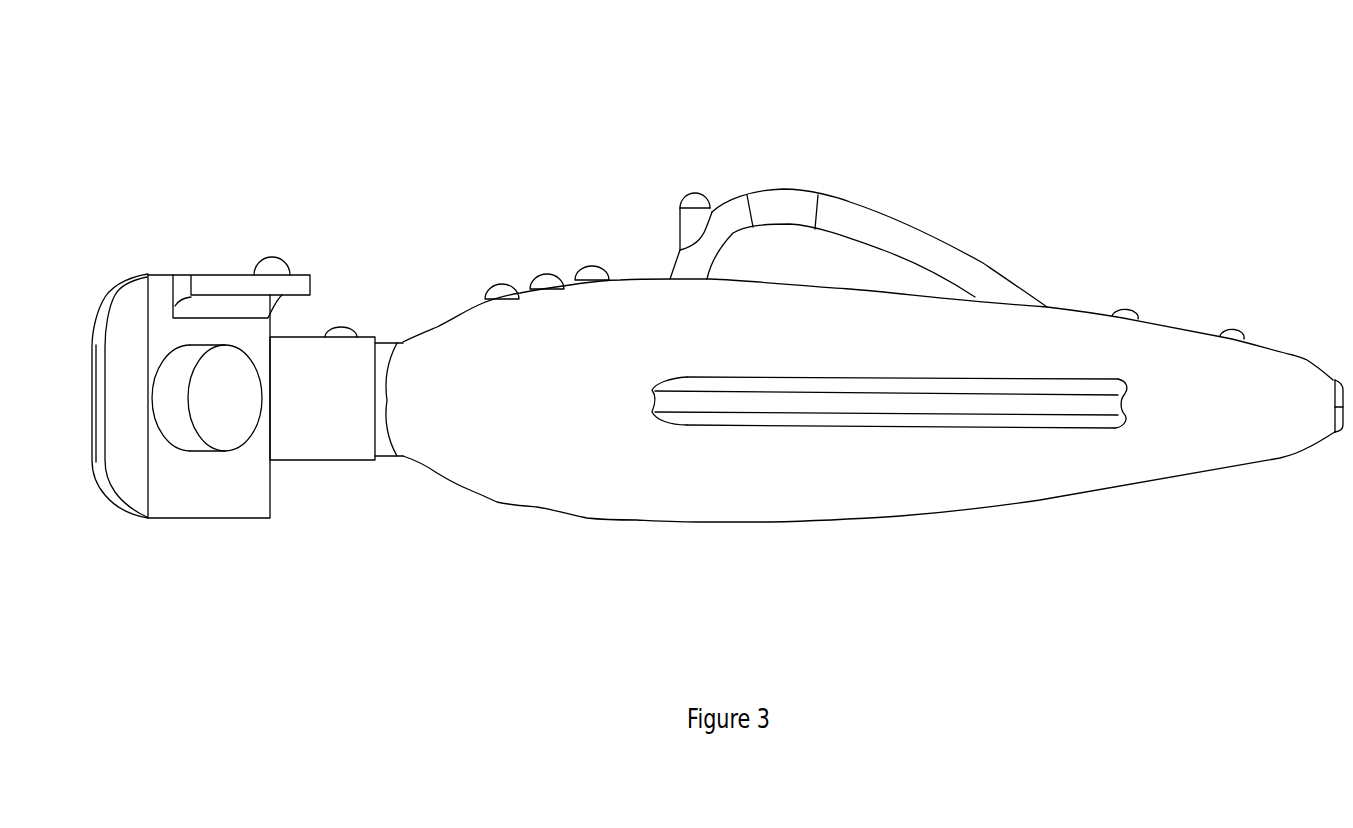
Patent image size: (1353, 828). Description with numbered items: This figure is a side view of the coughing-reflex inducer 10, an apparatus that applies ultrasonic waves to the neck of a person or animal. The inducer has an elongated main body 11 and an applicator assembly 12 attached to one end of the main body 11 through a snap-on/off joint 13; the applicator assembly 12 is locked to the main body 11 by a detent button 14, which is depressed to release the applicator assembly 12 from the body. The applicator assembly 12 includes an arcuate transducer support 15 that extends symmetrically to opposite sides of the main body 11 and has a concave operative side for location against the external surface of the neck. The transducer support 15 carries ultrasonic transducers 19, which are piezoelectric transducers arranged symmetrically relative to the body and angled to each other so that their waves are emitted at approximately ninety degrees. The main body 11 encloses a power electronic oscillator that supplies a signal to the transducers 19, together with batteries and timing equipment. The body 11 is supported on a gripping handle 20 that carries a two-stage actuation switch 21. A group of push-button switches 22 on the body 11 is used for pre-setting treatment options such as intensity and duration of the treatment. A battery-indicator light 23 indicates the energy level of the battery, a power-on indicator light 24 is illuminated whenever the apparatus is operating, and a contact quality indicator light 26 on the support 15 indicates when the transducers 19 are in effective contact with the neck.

The coughing-reflex inducer 10 is at (1103, 135).
The elongated main body 11 is at (740, 513).
The applicator assembly 12 is at (264, 146).
The snap-on/off joint 13 is at (362, 457).
The detent button 14 is at (341, 327).
The arcuate transducer support 15 is at (220, 502).
The ultrasonic transducers 19 is at (232, 438).
The gripping handle 20 is at (853, 215).
The two-stage actuation switch 21 is at (697, 193).
The push-button switches 22 is at (502, 283).
The battery-indicator light 23 is at (1233, 332).
The power-on indicator light 24 is at (1125, 310).
The contact quality indicator light 26 is at (270, 257).